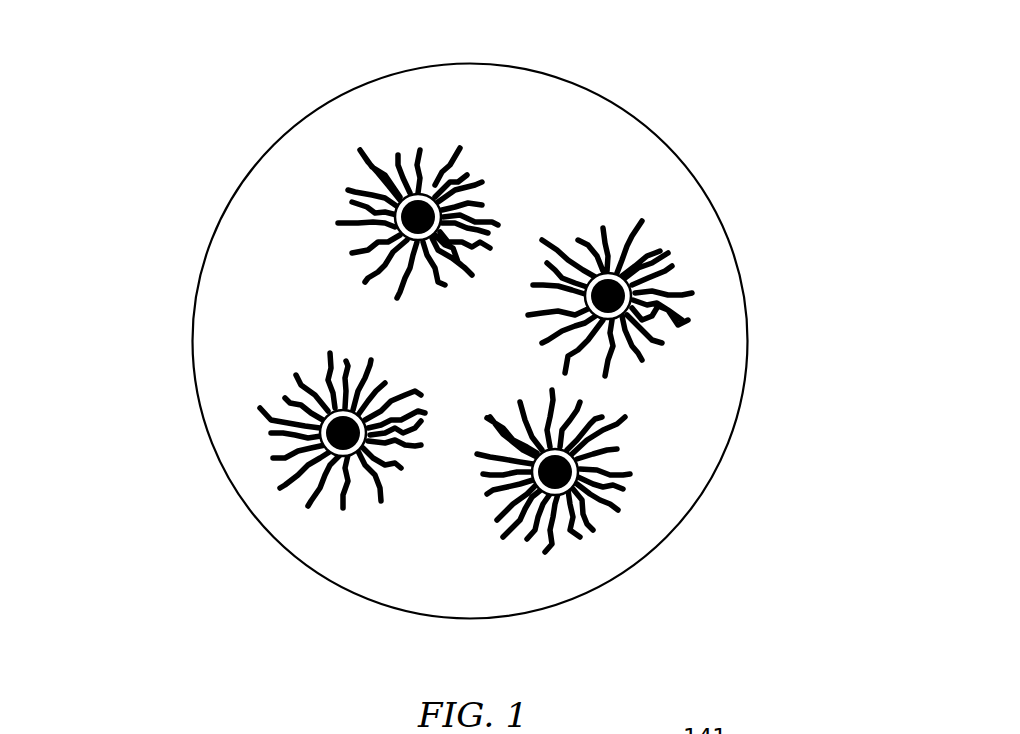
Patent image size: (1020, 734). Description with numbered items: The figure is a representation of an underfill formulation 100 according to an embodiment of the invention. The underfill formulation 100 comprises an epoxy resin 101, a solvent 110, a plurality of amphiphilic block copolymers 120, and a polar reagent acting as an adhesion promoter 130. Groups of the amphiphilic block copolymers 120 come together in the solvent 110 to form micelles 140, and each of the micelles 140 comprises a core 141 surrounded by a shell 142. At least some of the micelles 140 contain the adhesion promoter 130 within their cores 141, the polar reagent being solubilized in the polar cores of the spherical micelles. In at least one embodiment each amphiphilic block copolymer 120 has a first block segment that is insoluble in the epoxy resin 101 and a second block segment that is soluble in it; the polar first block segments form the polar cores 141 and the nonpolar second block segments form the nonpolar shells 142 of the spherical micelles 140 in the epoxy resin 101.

The underfill formulation 100 is at (765, 127).
The epoxy resin 101 is at (463, 577).
The solvent 110 is at (585, 160).
The amphiphilic block copolymers 120 is at (263, 412).
The adhesion promoter 130 is at (615, 305).
The micelles 140 is at (378, 183).
The core 141 is at (416, 200).
The shell 142 is at (482, 275).